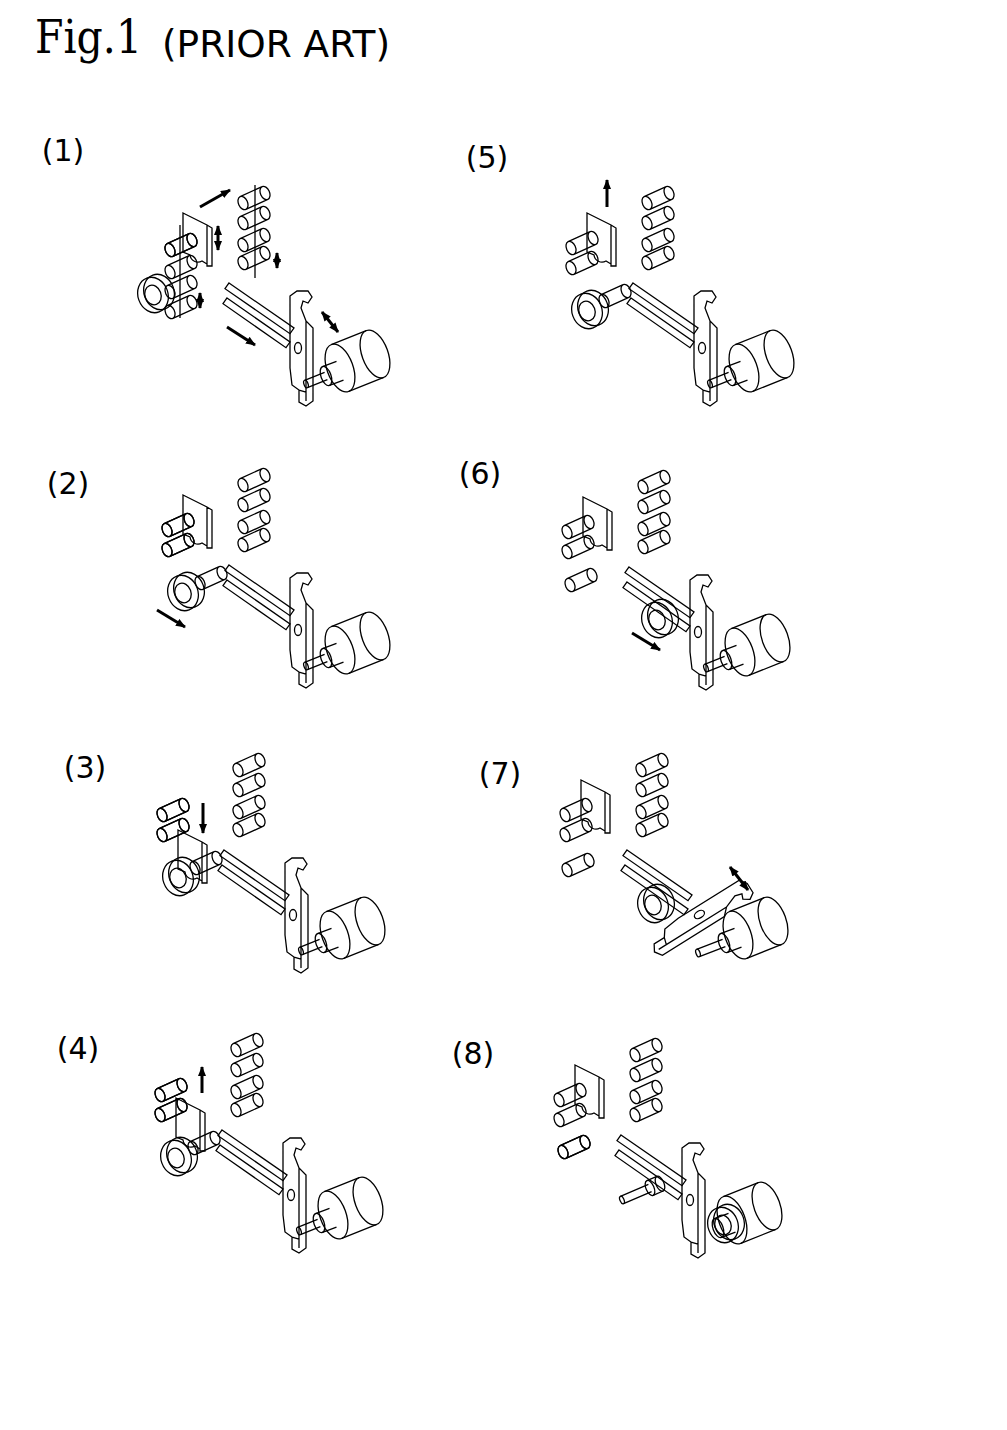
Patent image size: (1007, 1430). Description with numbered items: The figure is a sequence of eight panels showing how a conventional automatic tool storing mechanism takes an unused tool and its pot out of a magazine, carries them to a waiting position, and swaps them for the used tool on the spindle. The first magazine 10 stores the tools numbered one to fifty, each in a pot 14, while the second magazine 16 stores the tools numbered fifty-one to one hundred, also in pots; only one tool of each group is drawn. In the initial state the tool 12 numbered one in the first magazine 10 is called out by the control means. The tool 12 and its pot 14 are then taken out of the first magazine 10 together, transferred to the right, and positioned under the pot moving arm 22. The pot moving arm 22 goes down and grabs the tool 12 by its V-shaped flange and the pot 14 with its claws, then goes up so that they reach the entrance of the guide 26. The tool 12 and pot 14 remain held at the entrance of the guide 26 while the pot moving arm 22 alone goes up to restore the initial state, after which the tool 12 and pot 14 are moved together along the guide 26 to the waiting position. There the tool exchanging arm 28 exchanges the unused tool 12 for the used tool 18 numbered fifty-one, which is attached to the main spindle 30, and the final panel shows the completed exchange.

The first magazine 10 is at (133, 537).
The tool 12 is at (386, 697).
The pot 14 is at (303, 429).
The second magazine 16 is at (290, 518).
The tool 18 is at (327, 669).
The pot moving arm 22 is at (190, 494).
The guide 26 is at (257, 577).
The tool exchanging arm 28 is at (312, 603).
The main spindle 30 is at (383, 650).